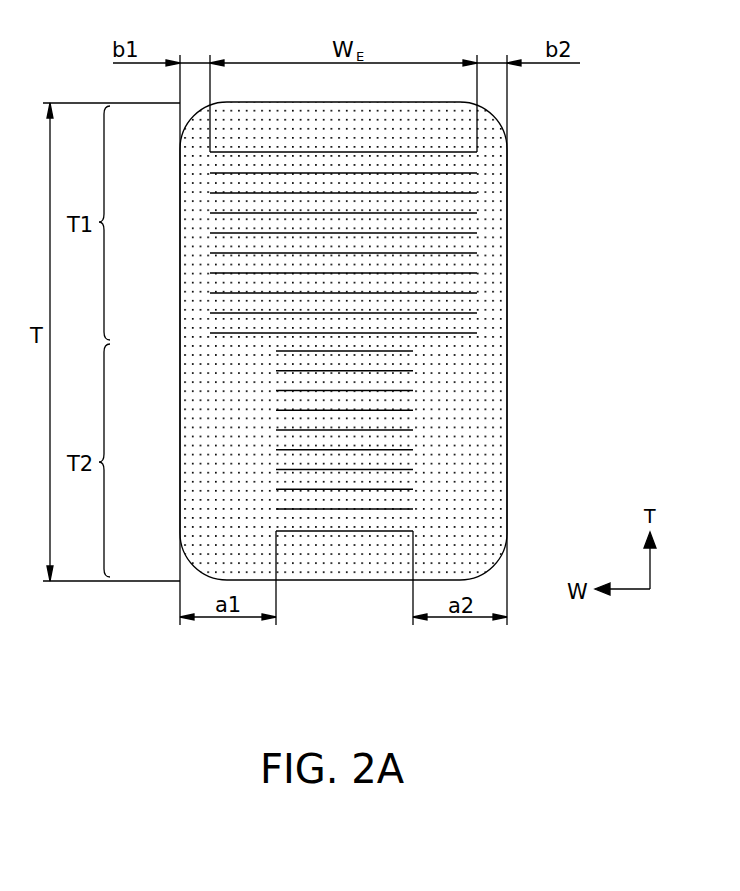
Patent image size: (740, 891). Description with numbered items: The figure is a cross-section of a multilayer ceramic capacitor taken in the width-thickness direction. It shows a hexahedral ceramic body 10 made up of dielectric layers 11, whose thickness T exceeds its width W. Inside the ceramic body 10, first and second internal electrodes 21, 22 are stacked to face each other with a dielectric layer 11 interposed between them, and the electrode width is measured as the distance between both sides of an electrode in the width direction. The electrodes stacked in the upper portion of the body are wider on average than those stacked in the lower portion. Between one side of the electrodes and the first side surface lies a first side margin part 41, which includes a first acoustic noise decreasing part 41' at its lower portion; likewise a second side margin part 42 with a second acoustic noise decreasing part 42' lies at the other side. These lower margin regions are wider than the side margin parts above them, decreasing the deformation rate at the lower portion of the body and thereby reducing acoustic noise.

The ceramic body 10 is at (407, 82).
The dielectric layers 11 is at (407, 263).
The first internal electrode 21 is at (406, 467).
The second internal electrode 22 is at (406, 490).
The first side margin part 41 is at (166, 221).
The first acoustic noise decreasing part 41' is at (197, 460).
The second side margin part 42 is at (527, 227).
The second acoustic noise decreasing part 42' is at (498, 460).